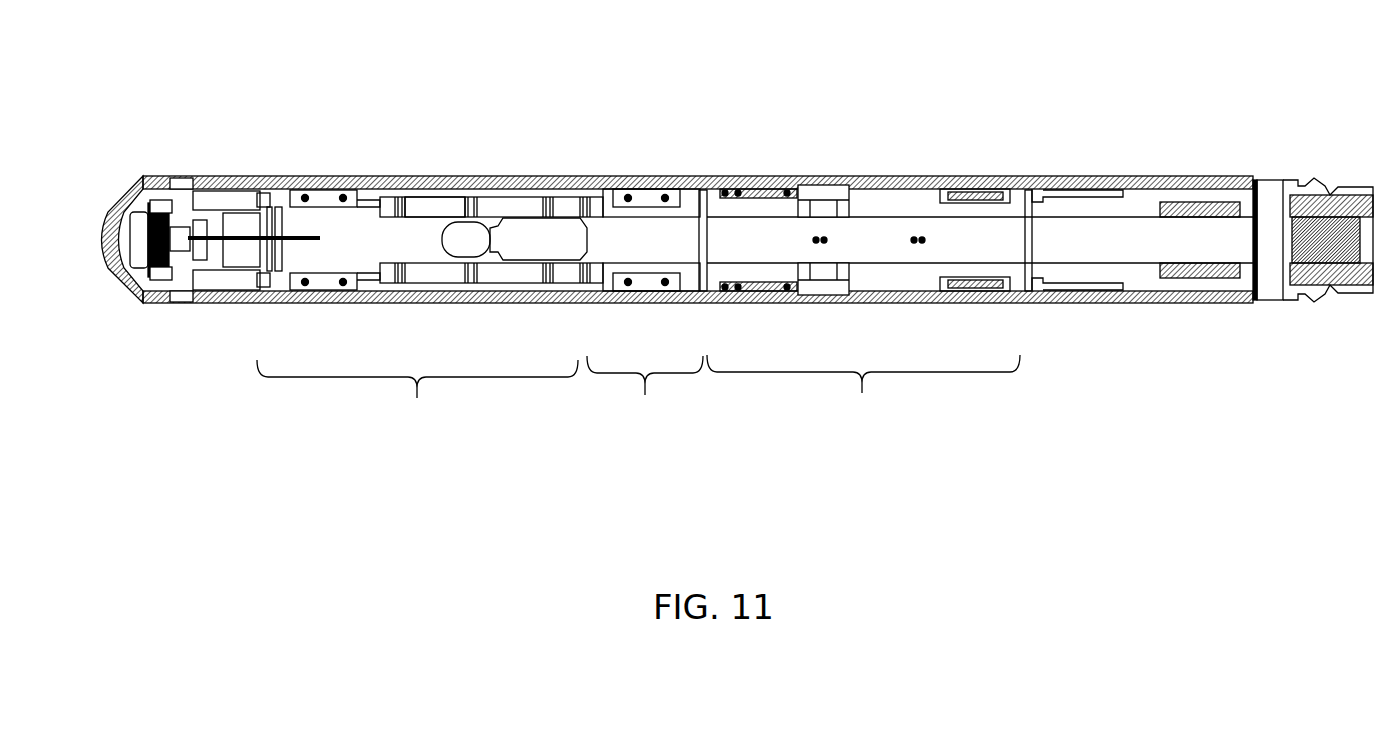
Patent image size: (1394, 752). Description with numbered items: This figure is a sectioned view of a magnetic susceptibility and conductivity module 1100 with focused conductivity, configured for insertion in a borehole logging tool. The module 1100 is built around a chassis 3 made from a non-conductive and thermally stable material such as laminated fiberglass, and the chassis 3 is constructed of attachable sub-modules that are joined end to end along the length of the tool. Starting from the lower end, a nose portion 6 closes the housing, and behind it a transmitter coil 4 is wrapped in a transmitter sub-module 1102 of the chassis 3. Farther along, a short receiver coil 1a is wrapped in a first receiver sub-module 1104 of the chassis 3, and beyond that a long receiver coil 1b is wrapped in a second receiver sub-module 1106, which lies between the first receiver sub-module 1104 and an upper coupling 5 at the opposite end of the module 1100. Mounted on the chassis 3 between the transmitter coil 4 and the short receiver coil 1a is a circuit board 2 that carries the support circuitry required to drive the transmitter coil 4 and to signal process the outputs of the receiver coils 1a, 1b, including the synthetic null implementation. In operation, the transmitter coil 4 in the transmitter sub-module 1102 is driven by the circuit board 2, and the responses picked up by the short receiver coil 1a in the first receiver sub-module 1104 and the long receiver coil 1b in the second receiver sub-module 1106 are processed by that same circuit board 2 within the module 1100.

The magnetic susceptibility and conductivity module 1100 is at (728, 106).
The nose / bottom cap 6 is at (122, 190).
The transmitter coil 4 is at (320, 190).
The circuit board 2 is at (372, 240).
The chassis 3 is at (448, 207).
The short receiver coil 1a is at (652, 200).
The long receiver coil 1b is at (977, 200).
The upper coupling 5 is at (1337, 188).
The sub-module TX1 1102 is at (417, 398).
The sub-module RX1 1104 is at (645, 397).
The sub-module RX2 1106 is at (862, 395).